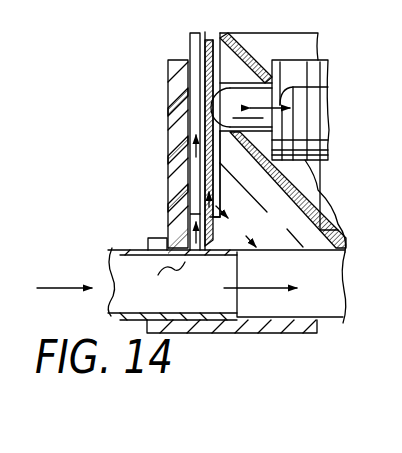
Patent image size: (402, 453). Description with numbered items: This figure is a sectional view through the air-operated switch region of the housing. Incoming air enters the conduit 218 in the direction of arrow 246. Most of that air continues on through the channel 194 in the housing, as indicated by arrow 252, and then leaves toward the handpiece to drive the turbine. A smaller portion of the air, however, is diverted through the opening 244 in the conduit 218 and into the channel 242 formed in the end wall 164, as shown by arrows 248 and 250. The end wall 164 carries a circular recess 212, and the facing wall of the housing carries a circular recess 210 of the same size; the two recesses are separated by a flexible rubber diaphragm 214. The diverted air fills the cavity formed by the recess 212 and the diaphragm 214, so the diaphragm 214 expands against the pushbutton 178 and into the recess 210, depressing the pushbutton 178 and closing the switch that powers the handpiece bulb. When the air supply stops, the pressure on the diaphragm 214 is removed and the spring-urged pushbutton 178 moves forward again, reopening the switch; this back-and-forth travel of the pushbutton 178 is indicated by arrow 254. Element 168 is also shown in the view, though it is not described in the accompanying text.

The end wall 164 is at (165, 103).
The circular recess 212 is at (197, 58).
The flexible rubber diaphragm 214 is at (203, 40).
The circular recess 210 is at (215, 39).
The arrow 250 is at (190, 160).
The pushbutton 178 is at (240, 92).
The arrow 254 is at (328, 87).
The channel 242 is at (204, 243).
The channel 194 is at (328, 285).
The conduit 218 is at (147, 246).
The arrow 246 is at (53, 285).
The arrow 248 is at (155, 284).
The opening 244 is at (238, 282).
The arrow 252 is at (262, 290).
The base 168 is at (298, 332).